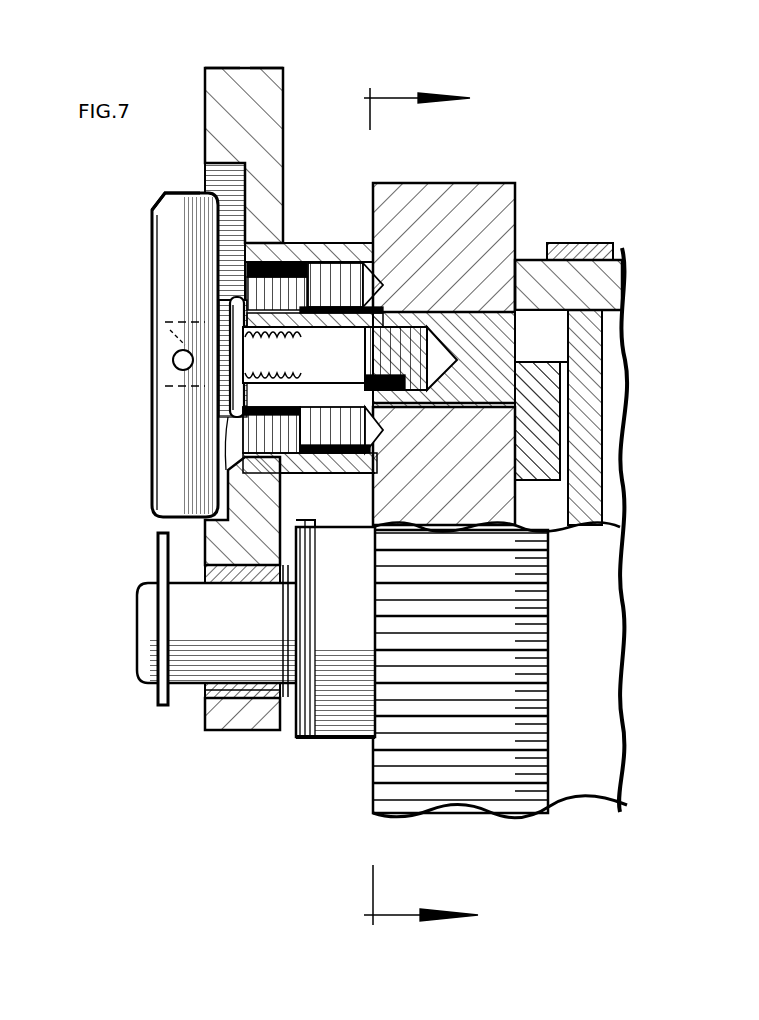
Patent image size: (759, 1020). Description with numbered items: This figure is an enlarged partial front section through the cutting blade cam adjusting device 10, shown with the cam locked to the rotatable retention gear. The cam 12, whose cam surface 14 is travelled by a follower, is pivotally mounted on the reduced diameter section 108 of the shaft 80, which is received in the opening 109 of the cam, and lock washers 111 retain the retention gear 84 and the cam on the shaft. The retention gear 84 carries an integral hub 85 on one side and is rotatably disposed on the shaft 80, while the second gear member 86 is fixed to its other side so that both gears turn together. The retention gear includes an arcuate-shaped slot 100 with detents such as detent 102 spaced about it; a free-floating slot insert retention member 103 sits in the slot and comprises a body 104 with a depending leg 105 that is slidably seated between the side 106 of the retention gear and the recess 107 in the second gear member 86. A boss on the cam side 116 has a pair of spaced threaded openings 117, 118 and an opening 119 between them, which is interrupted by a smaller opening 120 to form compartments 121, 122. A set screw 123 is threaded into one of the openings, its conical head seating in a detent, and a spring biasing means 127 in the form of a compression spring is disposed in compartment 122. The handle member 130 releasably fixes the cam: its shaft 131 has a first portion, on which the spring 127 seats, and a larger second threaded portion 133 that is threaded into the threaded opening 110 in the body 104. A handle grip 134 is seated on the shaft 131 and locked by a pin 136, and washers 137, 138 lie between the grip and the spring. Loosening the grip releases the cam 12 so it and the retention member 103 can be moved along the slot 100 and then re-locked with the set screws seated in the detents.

The cutting blade cam adjusting device 10 is at (434, 506).
The cam 12 is at (277, 108).
The cam surface 14 is at (213, 67).
The shaft 80 is at (137, 612).
The retention gear 84 is at (462, 183).
The hub 85 is at (338, 740).
The second gear member 86 is at (626, 285).
The arcuate-shaped slot 100 is at (600, 243).
The detent 102 is at (345, 470).
The slot insert retention member 103 is at (452, 410).
The body 104 is at (480, 305).
The depending leg 105 is at (550, 405).
The side of gear 106 is at (603, 515).
The recess 107 is at (560, 333).
The reduced diameter section 108 is at (186, 690).
The opening 109 is at (230, 688).
The threaded opening 110 is at (262, 733).
The lock washers 111 is at (160, 698).
The cam side 116 is at (288, 70).
The threaded opening 117 is at (285, 265).
The threaded opening 118 is at (226, 513).
The opening 119 is at (318, 455).
The smaller opening 120 is at (390, 300).
The compartment 121 is at (335, 470).
The compartment 122 is at (230, 400).
The set screw 123 is at (330, 265).
The spring biasing means 127 is at (278, 345).
The handle member 130 is at (152, 247).
The shaft 131 is at (165, 322).
The second threaded portion 133 is at (410, 440).
The handle grip 134 is at (155, 208).
The pin 136 is at (173, 360).
The washer 137 is at (226, 422).
The washer 138 is at (228, 300).